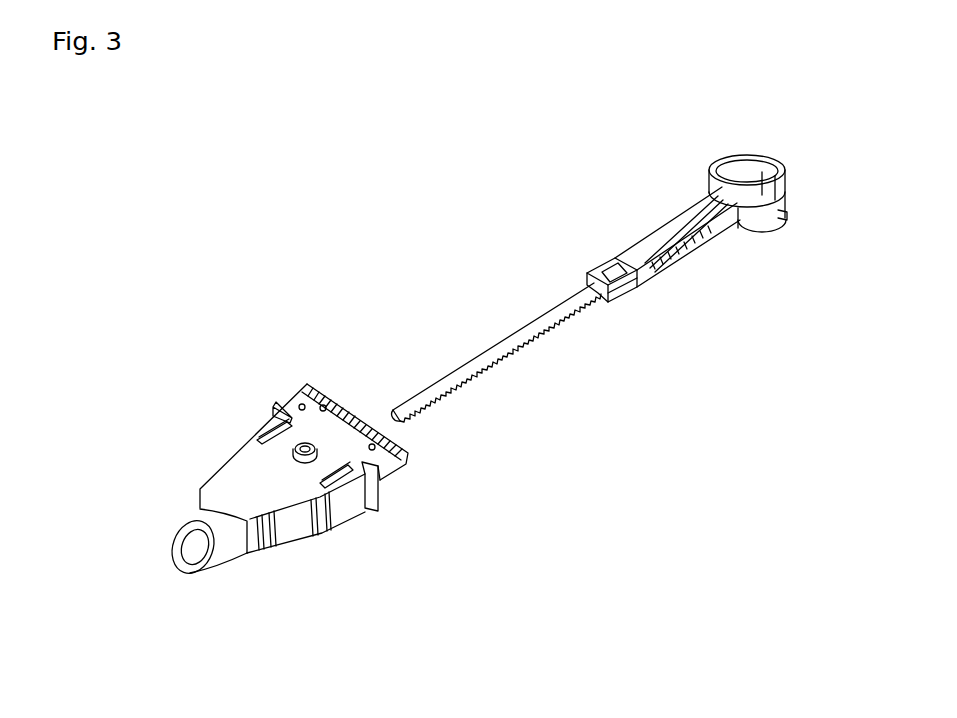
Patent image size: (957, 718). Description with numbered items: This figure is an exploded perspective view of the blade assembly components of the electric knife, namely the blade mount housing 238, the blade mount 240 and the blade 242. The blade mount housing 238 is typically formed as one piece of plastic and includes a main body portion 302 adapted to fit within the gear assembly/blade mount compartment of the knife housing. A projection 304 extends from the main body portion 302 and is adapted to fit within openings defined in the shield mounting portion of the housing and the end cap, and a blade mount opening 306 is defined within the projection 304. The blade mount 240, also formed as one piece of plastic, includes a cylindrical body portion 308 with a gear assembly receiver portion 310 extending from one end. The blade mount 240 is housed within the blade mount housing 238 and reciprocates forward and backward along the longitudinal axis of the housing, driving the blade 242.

The blade mount housing 238 is at (301, 558).
The blade mount 240 is at (645, 192).
The blade 242 is at (491, 371).
The main body portion 302 is at (245, 470).
The projection 304 is at (227, 562).
The blade mount opening 306 is at (178, 553).
The body portion 308 is at (683, 262).
The gear assembly receiver portion 310 is at (788, 182).